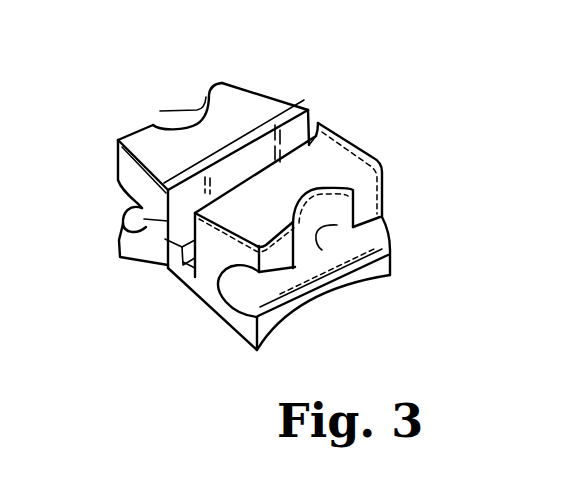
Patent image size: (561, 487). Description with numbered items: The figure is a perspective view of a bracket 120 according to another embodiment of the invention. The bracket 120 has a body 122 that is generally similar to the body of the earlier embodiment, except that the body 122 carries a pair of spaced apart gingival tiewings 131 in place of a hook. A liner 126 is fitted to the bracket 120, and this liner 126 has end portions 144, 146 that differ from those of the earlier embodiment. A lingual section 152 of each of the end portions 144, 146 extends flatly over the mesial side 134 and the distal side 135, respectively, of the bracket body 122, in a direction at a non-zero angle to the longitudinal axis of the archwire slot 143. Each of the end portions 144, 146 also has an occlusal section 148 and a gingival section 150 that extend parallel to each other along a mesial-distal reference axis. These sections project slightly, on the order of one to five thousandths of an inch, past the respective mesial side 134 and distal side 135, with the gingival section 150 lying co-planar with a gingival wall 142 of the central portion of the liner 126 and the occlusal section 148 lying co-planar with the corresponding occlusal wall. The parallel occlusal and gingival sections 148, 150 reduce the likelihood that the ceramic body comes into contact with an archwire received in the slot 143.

The bracket 120 is at (204, 63).
The body 122 is at (388, 144).
The liner 126 is at (327, 103).
The gingival tiewings 131 is at (164, 124).
The mesial side 134 is at (204, 275).
The distal side 135 is at (384, 162).
The gingival wall 142 is at (277, 120).
The archwire slot 143 is at (140, 207).
The end portion 144 is at (161, 246).
The end portion 146 is at (315, 90).
The occlusal section 148 is at (181, 260).
The gingival section 150 is at (317, 136).
The lingual section 152 is at (183, 256).